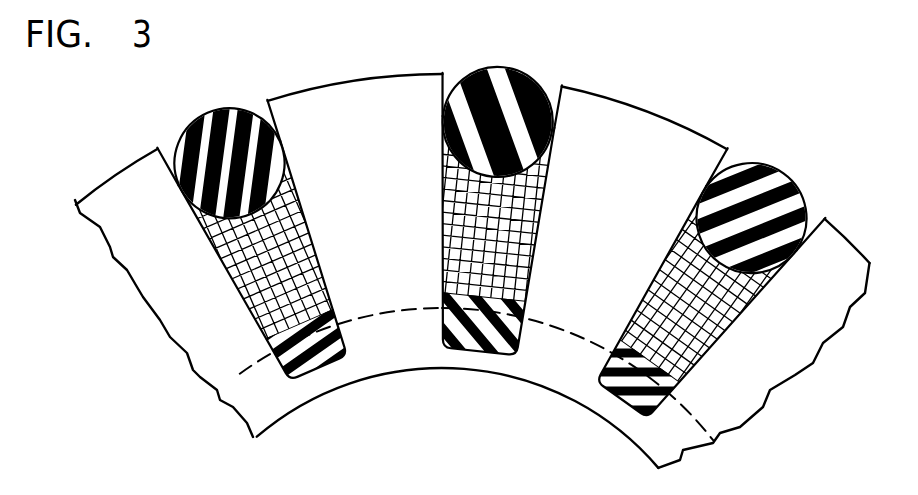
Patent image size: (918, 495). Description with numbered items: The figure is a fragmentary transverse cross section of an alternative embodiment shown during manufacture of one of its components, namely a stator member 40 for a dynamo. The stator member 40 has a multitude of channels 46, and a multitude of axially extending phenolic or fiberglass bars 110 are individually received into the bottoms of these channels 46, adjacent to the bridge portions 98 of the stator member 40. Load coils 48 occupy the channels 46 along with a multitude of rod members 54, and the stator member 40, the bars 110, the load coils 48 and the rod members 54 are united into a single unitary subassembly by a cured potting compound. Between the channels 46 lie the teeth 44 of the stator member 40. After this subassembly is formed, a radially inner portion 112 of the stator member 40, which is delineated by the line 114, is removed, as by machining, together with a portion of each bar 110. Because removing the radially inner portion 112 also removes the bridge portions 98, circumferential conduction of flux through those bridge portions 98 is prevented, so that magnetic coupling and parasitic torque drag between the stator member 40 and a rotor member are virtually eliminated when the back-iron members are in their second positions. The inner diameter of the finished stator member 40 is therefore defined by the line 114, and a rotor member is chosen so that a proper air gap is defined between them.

The stator member 40 is at (681, 81).
The tooth 44 is at (377, 155).
The channels 46 is at (266, 112).
The load coils 48 is at (247, 265).
The rod members 54 is at (207, 123).
The bridge portions 98 is at (327, 380).
The bars 110 is at (446, 327).
The radially inner portion 112 is at (581, 401).
The line 114 is at (240, 376).